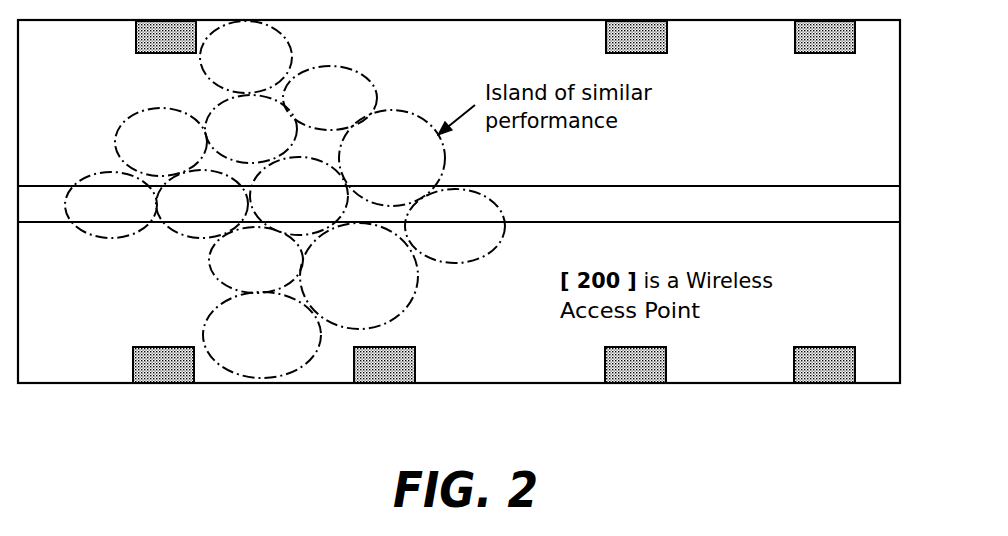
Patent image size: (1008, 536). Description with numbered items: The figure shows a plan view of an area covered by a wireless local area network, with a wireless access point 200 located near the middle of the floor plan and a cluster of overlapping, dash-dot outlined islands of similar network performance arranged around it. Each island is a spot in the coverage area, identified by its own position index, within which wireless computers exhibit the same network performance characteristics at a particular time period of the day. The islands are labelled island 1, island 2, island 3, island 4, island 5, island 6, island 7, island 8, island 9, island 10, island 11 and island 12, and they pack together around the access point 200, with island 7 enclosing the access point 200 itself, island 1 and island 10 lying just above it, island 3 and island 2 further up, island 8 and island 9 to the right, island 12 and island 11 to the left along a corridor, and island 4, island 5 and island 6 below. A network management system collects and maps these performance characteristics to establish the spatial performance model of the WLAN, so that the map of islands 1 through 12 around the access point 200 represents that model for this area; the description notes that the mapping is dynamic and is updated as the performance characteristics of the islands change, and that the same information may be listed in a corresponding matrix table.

The island 1 is at (251, 129).
The island 2 is at (330, 98).
The island 3 is at (246, 57).
The island 4 is at (256, 260).
The island 5 is at (359, 276).
The island 6 is at (262, 335).
The island 7 is at (299, 196).
The island 8 is at (392, 158).
The island 9 is at (455, 226).
The island 10 is at (161, 142).
The island 11 is at (202, 204).
The island 12 is at (111, 205).
The wireless access point 200 is at (292, 203).